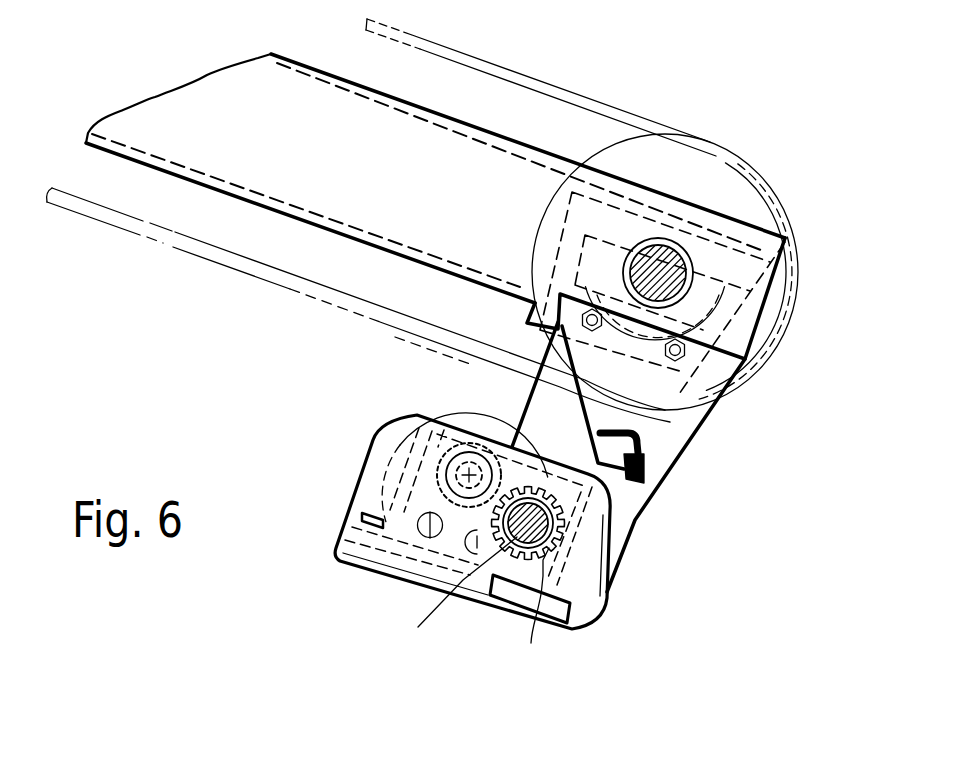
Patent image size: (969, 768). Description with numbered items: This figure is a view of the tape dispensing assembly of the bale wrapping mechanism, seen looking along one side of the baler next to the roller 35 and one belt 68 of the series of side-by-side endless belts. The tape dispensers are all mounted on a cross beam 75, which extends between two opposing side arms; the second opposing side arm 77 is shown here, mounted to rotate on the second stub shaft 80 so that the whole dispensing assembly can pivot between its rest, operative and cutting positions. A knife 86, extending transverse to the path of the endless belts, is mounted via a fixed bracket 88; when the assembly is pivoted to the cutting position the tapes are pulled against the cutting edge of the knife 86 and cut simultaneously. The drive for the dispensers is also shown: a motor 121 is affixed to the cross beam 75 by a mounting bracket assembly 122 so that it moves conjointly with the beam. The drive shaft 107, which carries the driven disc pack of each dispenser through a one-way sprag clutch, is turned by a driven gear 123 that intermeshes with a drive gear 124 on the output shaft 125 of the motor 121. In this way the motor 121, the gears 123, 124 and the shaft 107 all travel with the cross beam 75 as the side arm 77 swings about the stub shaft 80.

The roller 35 is at (698, 182).
The belt 68 is at (533, 78).
The cross beam 75 is at (531, 643).
The second opposing side arm 77 is at (634, 520).
The second stub shaft 80 is at (705, 308).
The knife 86 is at (648, 478).
The fixed bracket 88 is at (525, 400).
The drive shaft 107 is at (418, 627).
The motor 121 is at (462, 416).
The mounting bracket assembly 122 is at (332, 528).
The driven gear 123 is at (560, 548).
The drive gear 124 is at (432, 488).
The output shaft 125 is at (457, 476).